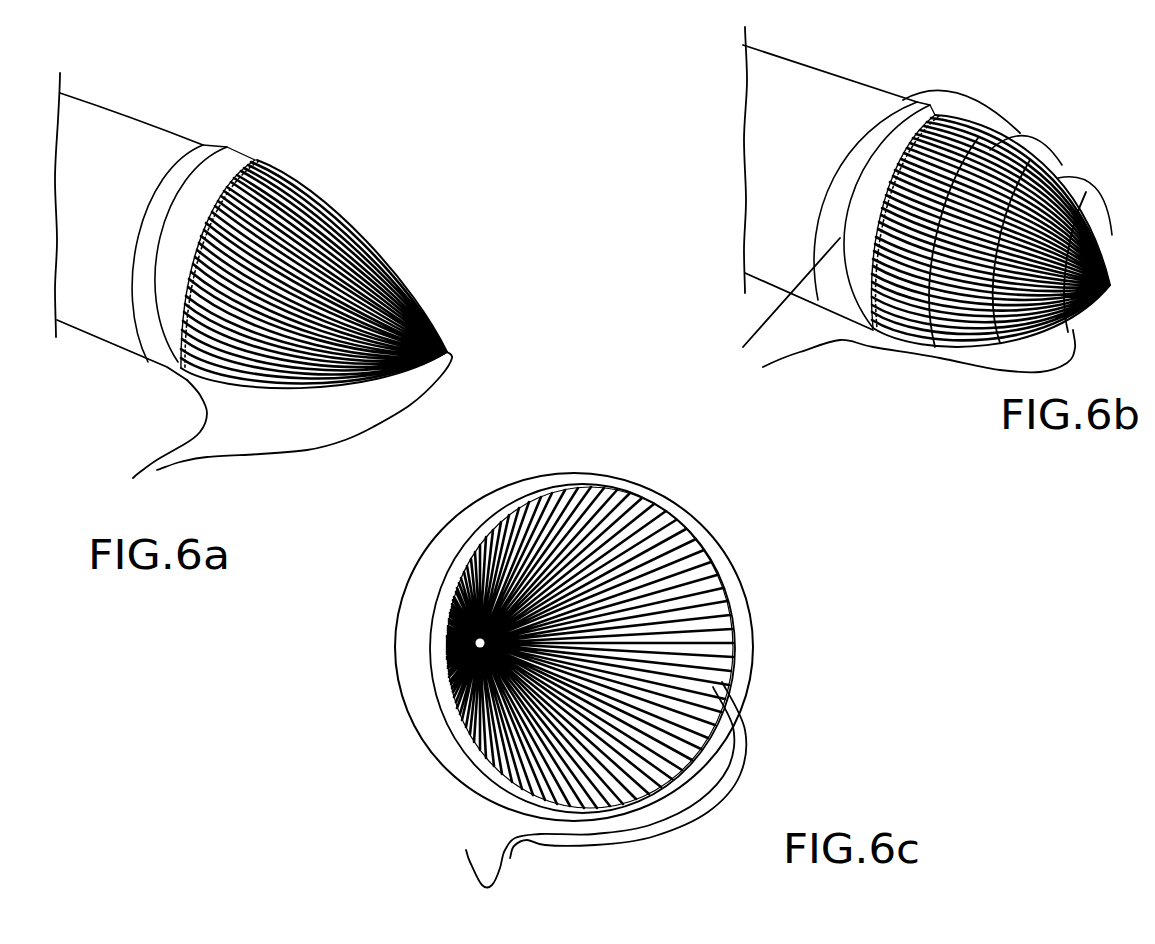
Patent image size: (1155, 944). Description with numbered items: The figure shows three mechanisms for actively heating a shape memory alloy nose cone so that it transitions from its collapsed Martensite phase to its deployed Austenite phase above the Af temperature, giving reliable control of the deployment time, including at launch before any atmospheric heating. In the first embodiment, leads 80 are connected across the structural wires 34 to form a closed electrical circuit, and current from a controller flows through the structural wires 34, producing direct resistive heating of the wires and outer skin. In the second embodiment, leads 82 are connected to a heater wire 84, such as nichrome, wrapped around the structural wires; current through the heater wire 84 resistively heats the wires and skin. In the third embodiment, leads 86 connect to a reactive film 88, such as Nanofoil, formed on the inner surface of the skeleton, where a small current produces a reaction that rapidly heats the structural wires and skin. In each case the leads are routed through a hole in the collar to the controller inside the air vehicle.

In FIG. 6a, the structural wires 34 is at (335, 224).
In FIG. 6a, the leads 80 is at (185, 432).
In FIG. 6b, the leads 82 is at (767, 332).
In FIG. 6b, the heater wire 84 is at (984, 166).
In FIG. 6c, the leads 86 is at (505, 858).
In FIG. 6c, the reactive film 88 is at (717, 632).